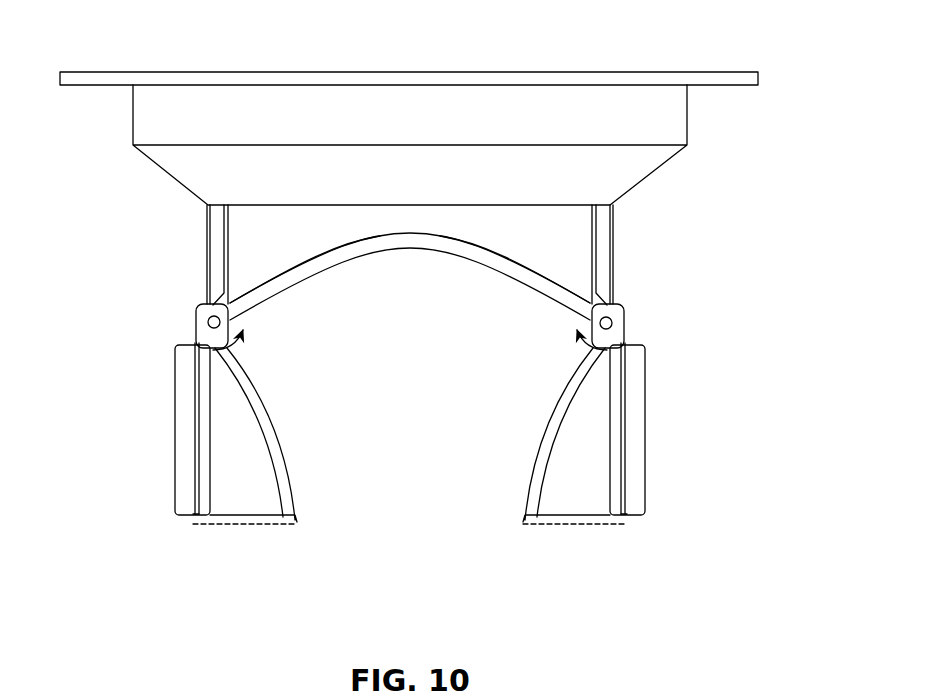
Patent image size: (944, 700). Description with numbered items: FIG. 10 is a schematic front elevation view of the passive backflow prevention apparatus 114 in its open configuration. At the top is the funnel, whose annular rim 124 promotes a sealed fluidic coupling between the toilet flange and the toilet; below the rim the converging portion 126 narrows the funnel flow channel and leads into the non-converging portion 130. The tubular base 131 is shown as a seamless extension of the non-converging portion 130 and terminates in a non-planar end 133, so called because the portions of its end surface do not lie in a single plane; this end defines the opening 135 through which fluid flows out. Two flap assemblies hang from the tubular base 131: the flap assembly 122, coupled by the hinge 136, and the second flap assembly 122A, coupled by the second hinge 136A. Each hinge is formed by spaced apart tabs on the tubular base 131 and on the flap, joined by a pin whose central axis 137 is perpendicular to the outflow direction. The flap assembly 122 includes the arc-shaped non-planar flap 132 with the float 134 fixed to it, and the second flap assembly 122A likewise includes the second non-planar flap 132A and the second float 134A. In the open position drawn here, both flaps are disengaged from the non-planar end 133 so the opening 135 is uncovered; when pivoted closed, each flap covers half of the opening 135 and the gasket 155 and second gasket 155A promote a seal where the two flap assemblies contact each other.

The passive backflow prevention apparatus 114 is at (715, 42).
The annular rim 124 is at (742, 72).
The converging portion 126 is at (666, 162).
The non-converging portion 130 is at (573, 247).
The tubular base 131 is at (283, 274).
The non-planar end 133 is at (490, 262).
The opening 135 is at (507, 284).
The second hinge 136A is at (192, 302).
The hinge 136 is at (630, 308).
The axis 137 is at (210, 322).
The second float 134A is at (182, 447).
The float 134 is at (647, 407).
The second non-planar flap 132A is at (238, 503).
The non-planar flap 132 is at (567, 493).
The second gasket 155A is at (296, 526).
The gasket 155 is at (537, 527).
The second flap assembly 122A is at (193, 524).
The flap assembly 122 is at (595, 524).